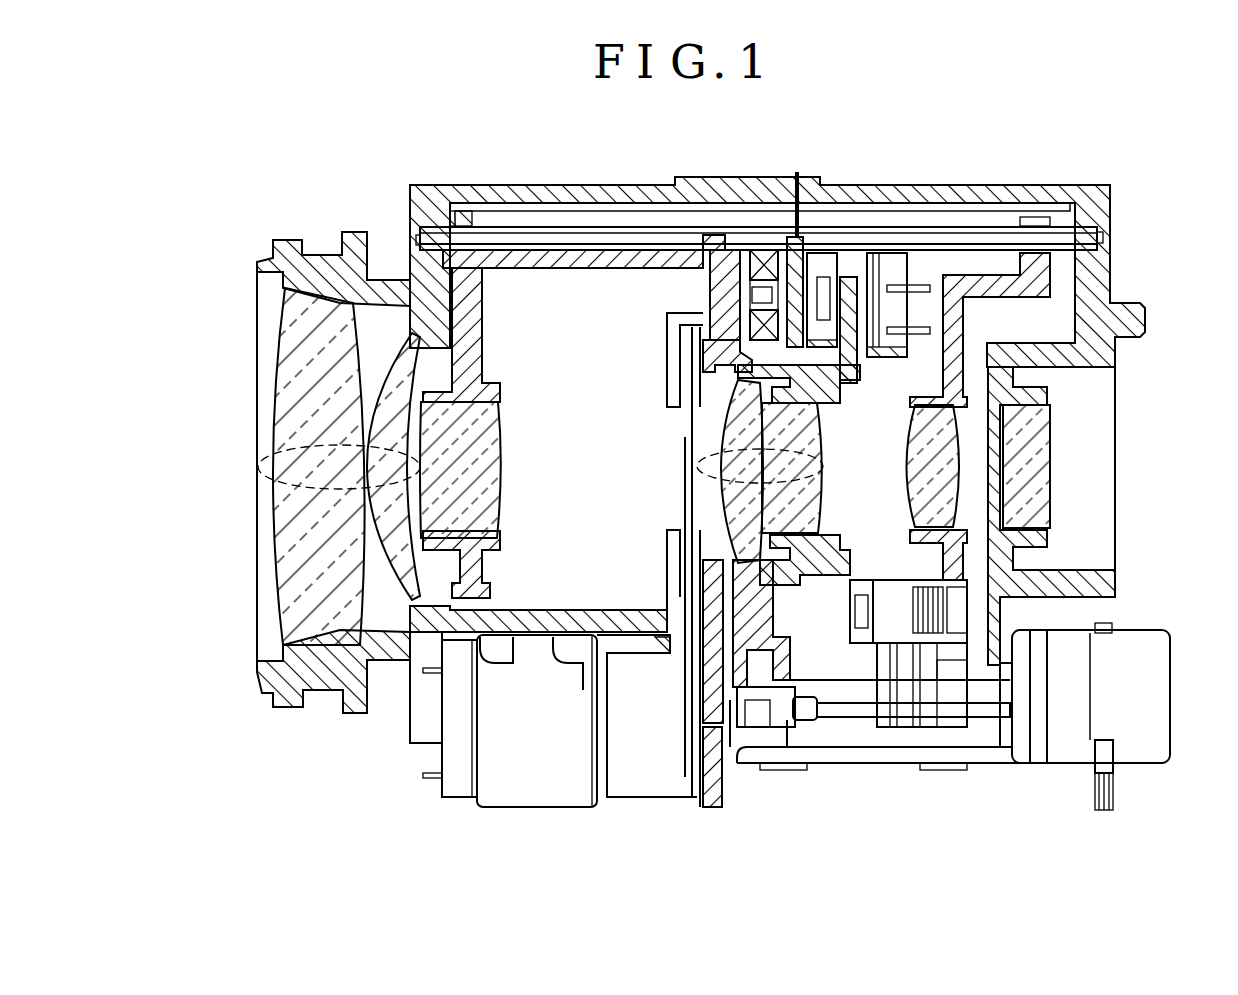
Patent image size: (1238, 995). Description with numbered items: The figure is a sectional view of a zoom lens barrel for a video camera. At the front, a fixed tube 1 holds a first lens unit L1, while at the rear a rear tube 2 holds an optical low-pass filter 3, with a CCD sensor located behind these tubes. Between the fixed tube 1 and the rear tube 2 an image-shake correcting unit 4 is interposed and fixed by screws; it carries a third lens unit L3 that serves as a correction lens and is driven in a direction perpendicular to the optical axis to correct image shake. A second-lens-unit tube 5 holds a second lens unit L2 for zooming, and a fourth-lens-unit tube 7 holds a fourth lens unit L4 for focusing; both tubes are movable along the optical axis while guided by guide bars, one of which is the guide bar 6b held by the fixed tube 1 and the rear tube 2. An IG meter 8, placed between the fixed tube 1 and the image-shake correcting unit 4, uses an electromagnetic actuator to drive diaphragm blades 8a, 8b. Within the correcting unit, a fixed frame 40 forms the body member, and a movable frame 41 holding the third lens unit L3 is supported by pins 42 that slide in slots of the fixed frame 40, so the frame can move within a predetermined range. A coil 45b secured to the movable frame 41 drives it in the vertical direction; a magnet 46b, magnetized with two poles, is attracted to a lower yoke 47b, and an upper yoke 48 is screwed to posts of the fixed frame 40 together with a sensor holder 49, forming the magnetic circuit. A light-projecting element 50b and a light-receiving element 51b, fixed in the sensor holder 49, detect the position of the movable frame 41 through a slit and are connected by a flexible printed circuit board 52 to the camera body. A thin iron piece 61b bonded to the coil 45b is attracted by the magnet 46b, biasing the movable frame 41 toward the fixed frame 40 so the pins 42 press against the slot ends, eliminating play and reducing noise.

The fixed tube 1 is at (358, 236).
The rear tube 2 is at (990, 262).
The optical low-pass filter 3 is at (1053, 433).
The image-shake correcting unit 4 is at (852, 224).
The second-lens-unit tube 5 is at (496, 288).
The guide bar 6b is at (563, 222).
The fourth-lens-unit tube 7 is at (1005, 262).
The IG meter 8 is at (538, 785).
The diaphragm blade 8a is at (688, 480).
The diaphragm blade 8b is at (688, 398).
The fixed frame 40 is at (730, 722).
The movable frame 41 is at (768, 607).
The pin 42 is at (767, 700).
The coil 45b is at (746, 260).
The magnet 46b is at (712, 248).
The lower yoke 47b is at (700, 272).
The upper yoke 48 is at (792, 262).
The sensor holder 49 is at (830, 264).
The light-projecting element 50b is at (860, 262).
The light-receiving element 51b is at (914, 258).
The flexible printed circuit board 52 is at (945, 260).
The iron piece 61b is at (768, 252).
The first lens unit L1 is at (283, 488).
The second lens unit L2 is at (500, 440).
The third lens unit L3 is at (820, 472).
The fourth lens unit L4 is at (908, 452).